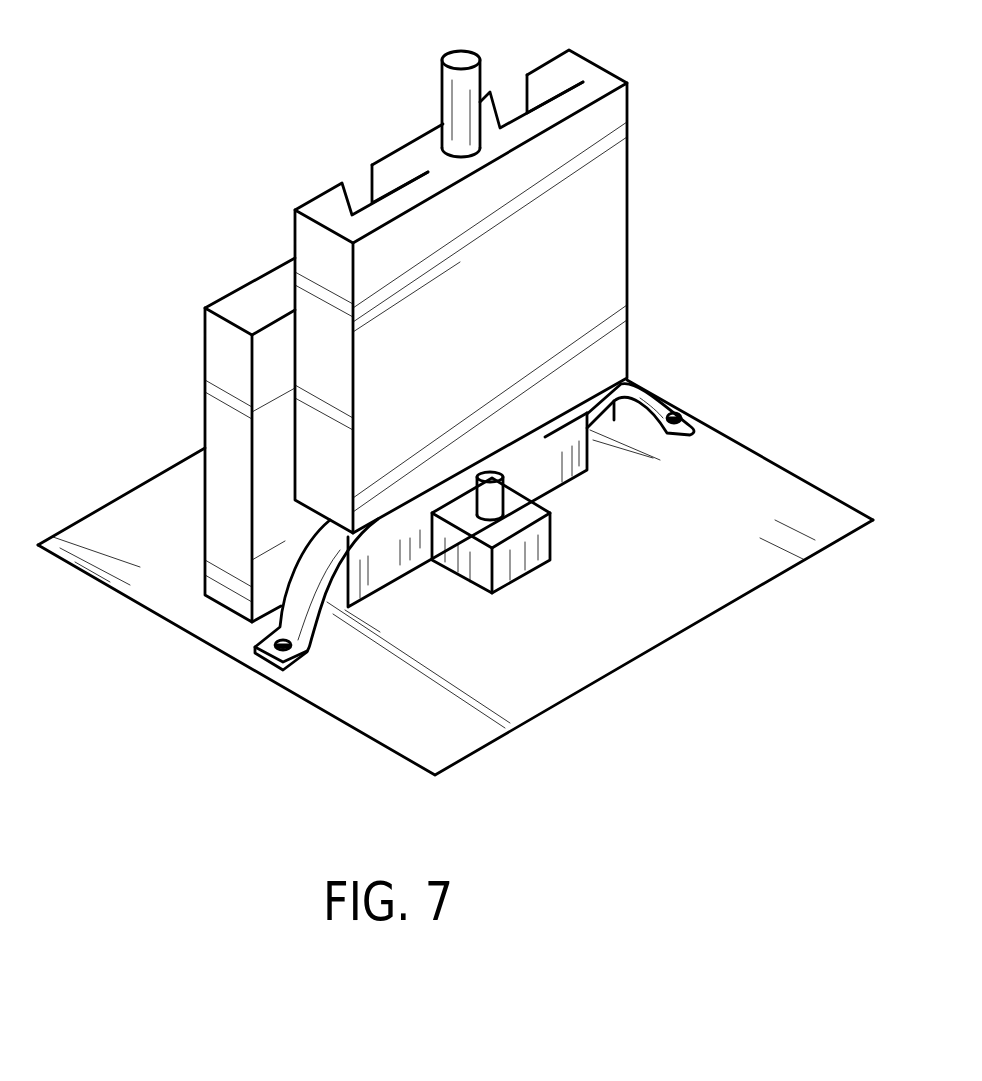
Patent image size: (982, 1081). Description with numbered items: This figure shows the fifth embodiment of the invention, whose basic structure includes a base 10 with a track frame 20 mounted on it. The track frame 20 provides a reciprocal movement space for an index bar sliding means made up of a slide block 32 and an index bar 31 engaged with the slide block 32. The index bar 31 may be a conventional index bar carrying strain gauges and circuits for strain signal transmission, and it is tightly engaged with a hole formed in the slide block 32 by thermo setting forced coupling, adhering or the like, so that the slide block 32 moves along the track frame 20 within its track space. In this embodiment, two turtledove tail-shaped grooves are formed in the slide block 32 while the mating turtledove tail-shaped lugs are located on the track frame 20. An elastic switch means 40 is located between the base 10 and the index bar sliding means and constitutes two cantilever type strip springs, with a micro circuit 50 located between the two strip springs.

The base 10 is at (720, 588).
The track frame 20 is at (218, 348).
The index bar 31 is at (453, 98).
The slide block 32 is at (618, 195).
The elastic switch means 40 is at (283, 642).
The micro circuit 50 is at (517, 566).